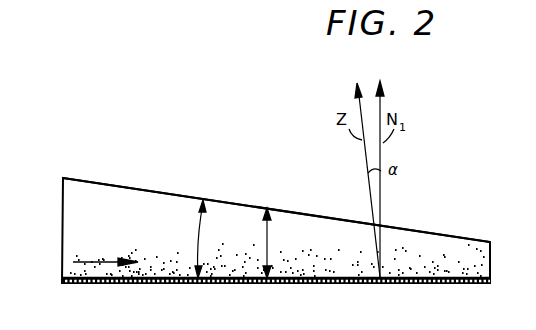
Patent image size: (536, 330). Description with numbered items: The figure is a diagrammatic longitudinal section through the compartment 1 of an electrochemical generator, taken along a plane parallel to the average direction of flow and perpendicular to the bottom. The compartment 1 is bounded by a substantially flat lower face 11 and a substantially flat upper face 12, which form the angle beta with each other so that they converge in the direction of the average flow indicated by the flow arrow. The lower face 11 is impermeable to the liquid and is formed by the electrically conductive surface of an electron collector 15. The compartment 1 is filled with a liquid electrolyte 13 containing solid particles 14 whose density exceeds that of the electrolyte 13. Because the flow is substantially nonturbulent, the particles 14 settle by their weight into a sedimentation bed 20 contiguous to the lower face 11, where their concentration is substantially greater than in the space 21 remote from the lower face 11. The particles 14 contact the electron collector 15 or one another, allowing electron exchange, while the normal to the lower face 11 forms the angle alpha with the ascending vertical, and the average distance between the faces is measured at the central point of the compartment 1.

The compartment 1 is at (113, 176).
The lower face 11 is at (470, 277).
The upper face 12 is at (408, 228).
The electrolyte 13 is at (425, 250).
The solid particles 14 is at (300, 262).
The electron collector 15 is at (146, 284).
The sedimentation bed 20 is at (155, 262).
The space remote from the lower face 21 is at (213, 215).